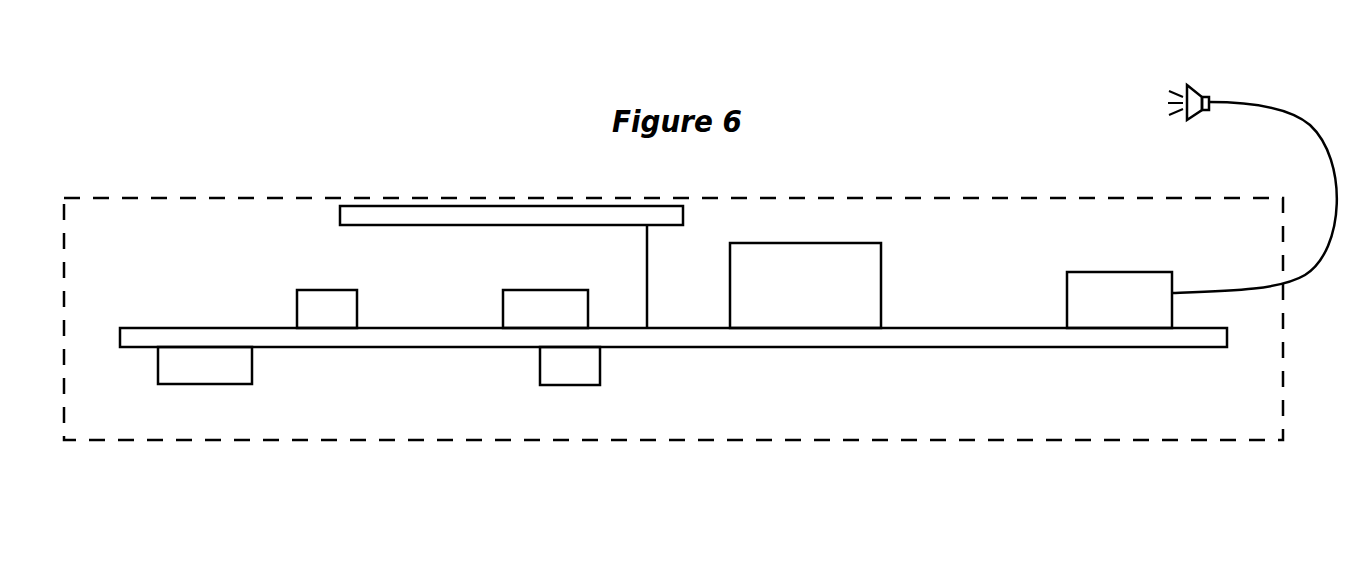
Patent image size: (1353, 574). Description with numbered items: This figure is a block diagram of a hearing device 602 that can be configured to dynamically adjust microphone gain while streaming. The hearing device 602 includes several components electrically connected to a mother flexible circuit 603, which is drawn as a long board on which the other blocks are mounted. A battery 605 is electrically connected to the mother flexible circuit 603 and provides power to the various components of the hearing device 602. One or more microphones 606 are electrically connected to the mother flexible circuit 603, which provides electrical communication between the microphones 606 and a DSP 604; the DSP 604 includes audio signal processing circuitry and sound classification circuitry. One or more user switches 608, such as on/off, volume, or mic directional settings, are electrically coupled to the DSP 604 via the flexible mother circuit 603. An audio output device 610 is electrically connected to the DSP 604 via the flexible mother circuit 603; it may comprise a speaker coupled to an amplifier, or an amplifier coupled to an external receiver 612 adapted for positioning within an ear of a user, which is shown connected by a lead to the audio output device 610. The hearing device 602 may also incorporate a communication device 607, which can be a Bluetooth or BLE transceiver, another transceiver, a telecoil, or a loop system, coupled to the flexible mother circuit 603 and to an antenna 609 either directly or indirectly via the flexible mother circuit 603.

The hearing device 602 is at (192, 197).
The mother flexible circuit 603 is at (937, 347).
The DSP 604 is at (881, 243).
The battery 605 is at (205, 384).
The microphones 606 is at (327, 290).
The communication device 607 is at (542, 290).
The user switches 608 is at (570, 385).
The antenna 609 is at (340, 212).
The audio output device 610 is at (1113, 272).
The external receiver 612 is at (1193, 88).